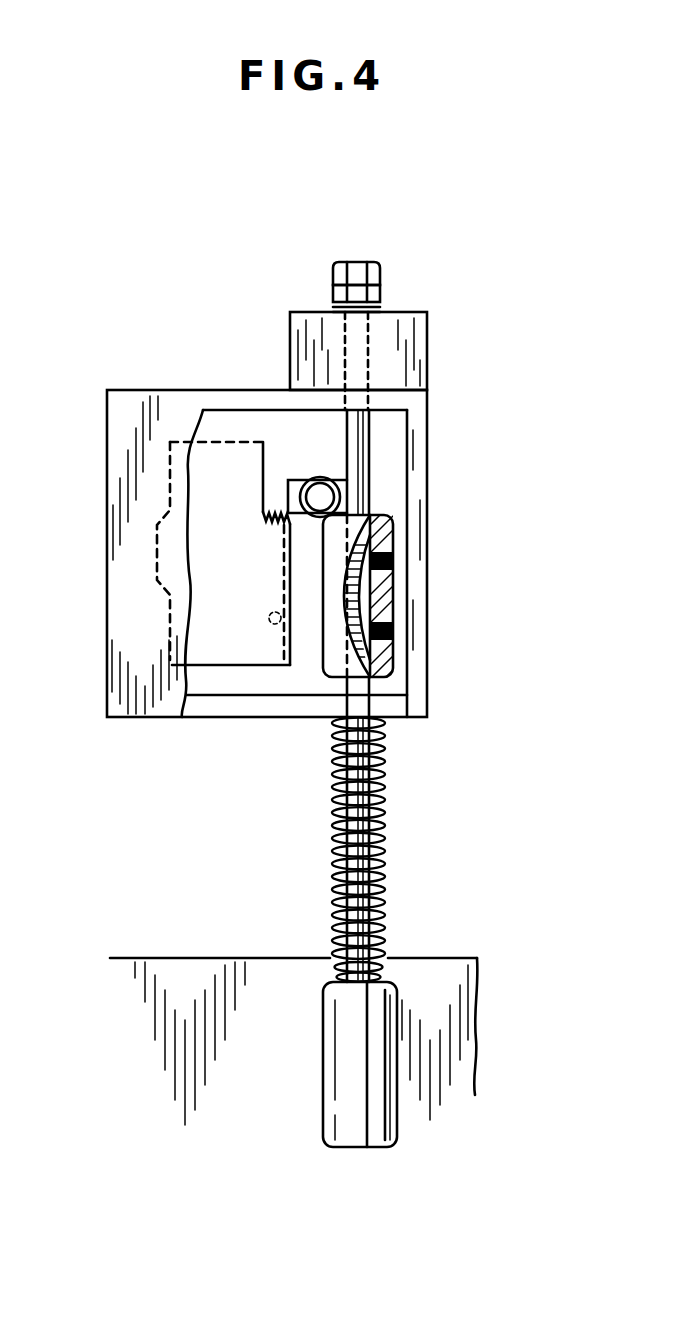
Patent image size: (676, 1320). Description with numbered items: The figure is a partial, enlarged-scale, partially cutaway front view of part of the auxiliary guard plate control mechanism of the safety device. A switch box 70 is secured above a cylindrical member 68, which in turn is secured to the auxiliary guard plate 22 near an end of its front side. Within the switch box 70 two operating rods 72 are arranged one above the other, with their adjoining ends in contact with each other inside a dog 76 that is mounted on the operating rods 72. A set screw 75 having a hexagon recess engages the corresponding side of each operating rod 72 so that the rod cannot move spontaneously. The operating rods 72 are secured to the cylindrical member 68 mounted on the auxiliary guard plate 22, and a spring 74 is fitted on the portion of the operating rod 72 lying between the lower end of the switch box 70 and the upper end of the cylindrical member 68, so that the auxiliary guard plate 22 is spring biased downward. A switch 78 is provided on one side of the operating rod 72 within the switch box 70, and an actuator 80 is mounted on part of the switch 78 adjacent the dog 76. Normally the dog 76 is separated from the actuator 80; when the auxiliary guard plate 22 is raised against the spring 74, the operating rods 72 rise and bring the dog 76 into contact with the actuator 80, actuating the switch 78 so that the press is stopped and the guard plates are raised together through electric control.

The auxiliary guard plate 22 is at (428, 1020).
The cylindrical member 68 is at (355, 1015).
The switch box 70 is at (132, 608).
The operating rod 72 is at (372, 449).
The spring 74 is at (384, 825).
The set screw 75 is at (391, 557).
The dog 76 is at (393, 595).
The switch 78 is at (235, 470).
The actuator 80 is at (343, 485).